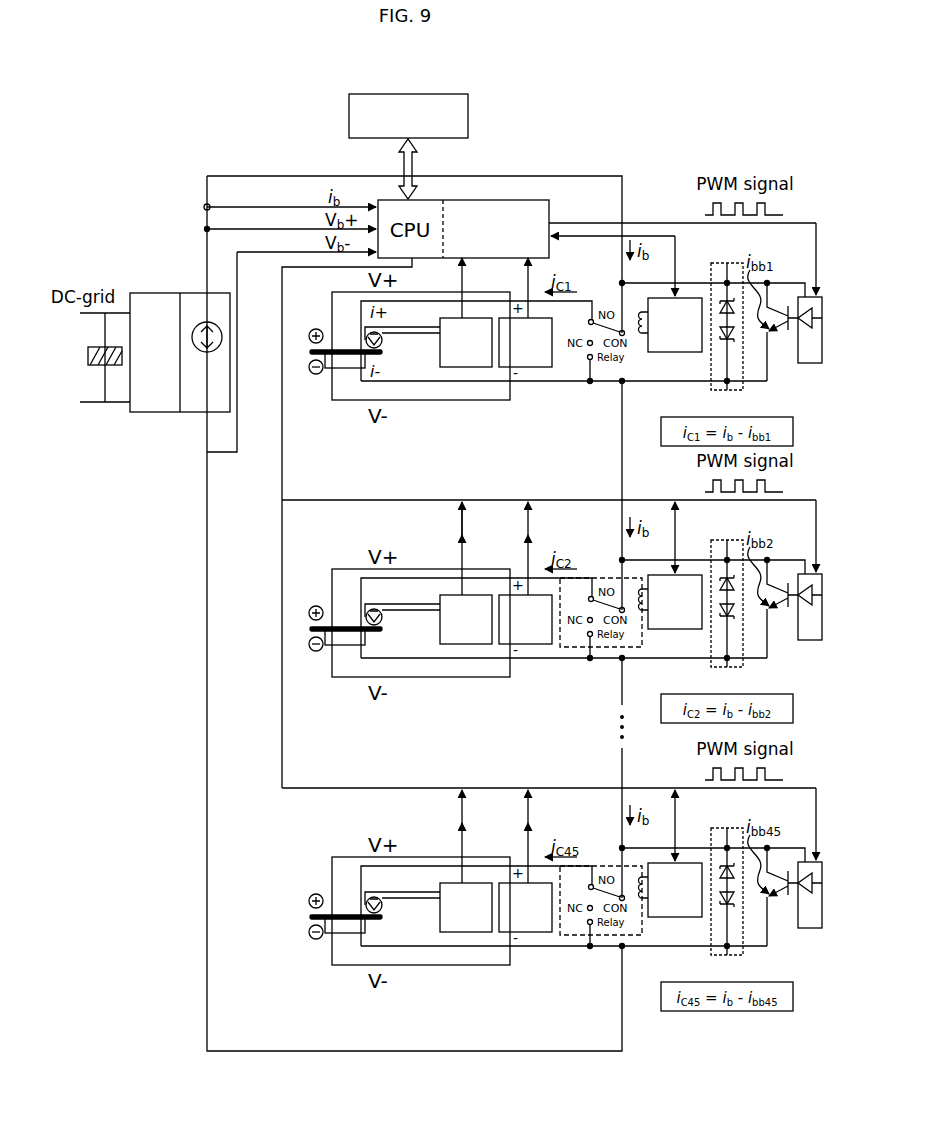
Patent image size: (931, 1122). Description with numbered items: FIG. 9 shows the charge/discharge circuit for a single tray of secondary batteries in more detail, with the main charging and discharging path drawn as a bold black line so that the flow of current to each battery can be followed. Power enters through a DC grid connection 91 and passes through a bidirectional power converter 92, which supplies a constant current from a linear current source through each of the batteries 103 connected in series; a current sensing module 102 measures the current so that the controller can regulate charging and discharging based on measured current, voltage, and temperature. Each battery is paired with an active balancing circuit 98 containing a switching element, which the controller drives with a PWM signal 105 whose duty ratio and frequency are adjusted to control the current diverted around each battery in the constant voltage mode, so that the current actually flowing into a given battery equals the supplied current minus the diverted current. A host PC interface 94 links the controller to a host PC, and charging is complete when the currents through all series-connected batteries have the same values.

The host PC interface 94 is at (349, 118).
The PWM signal 105 is at (705, 212).
The DC grid connection 91 is at (90, 368).
The bidirectional power converter 92 is at (153, 402).
The batteries 103 is at (346, 362).
The current sensing module 102 is at (466, 358).
The active balancing circuit 98 is at (786, 358).